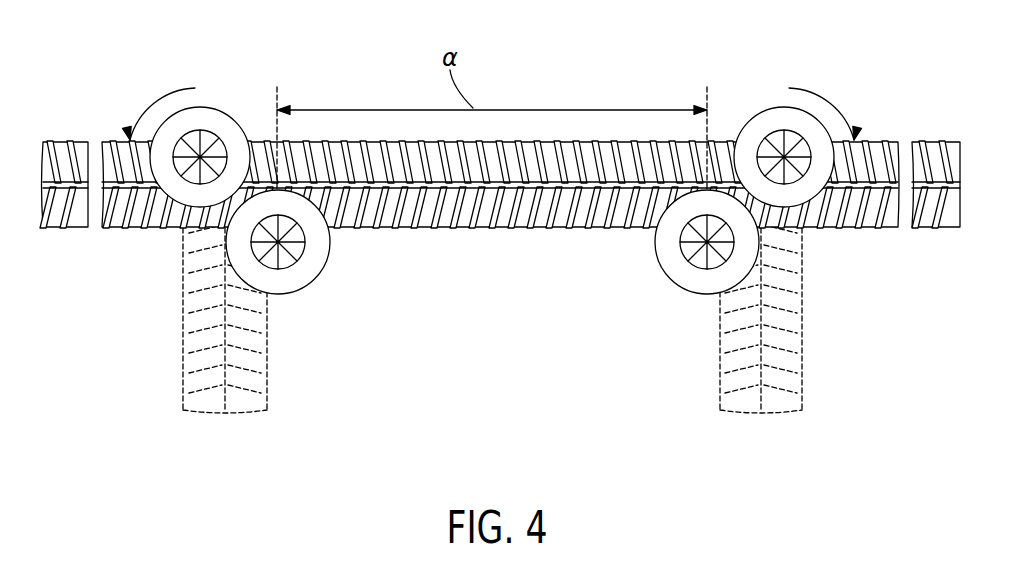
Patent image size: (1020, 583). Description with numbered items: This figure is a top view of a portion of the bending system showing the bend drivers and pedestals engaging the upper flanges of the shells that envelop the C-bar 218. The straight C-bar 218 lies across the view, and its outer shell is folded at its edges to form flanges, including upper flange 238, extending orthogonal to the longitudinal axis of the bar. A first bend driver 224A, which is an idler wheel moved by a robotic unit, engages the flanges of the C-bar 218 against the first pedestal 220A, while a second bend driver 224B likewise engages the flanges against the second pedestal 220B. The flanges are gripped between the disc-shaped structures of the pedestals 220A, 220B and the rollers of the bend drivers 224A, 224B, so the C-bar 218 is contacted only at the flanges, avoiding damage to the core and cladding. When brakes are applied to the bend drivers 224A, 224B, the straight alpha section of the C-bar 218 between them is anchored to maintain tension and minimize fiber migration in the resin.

The C-bar 218 is at (258, 140).
The first pedestal 220A is at (303, 278).
The second pedestal 220B is at (685, 275).
The first bend driver 224A is at (208, 107).
The second bend driver 224B is at (762, 123).
The upper flange 238 is at (225, 402).